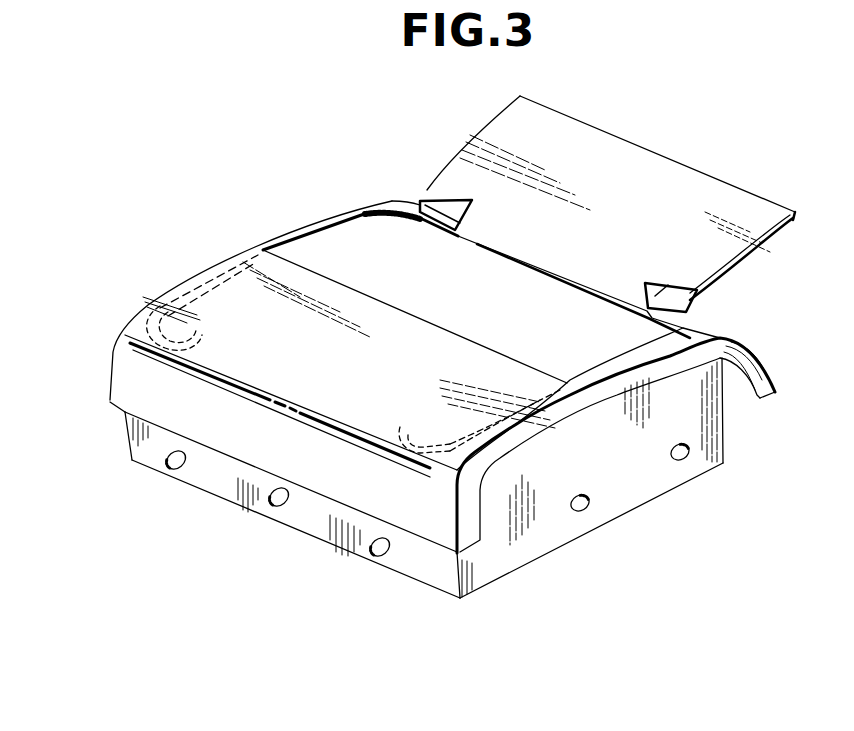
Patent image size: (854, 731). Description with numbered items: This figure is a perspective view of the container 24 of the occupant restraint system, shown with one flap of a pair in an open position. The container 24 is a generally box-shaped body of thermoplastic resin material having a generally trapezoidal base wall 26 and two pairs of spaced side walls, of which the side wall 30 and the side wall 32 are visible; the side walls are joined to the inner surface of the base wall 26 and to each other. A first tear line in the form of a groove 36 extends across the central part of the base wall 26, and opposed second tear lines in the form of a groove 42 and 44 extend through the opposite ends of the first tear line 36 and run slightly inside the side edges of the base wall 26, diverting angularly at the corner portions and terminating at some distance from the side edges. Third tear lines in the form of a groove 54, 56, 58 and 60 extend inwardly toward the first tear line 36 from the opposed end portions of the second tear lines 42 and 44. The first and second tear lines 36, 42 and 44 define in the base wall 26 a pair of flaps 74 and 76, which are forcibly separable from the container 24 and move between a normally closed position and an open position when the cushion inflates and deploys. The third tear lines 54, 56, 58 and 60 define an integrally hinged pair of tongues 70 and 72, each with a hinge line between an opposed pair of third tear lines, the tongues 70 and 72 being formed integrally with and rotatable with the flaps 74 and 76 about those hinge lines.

The container 24 is at (314, 196).
The base wall 26 is at (213, 257).
The side wall 30 is at (633, 483).
The side wall 32 is at (320, 523).
The first tear line in the form of a groove 36 is at (437, 323).
The second tear line in the form of a groove 42 is at (245, 262).
The second tear line in the form of a groove 44 is at (507, 423).
The third tear line in the form of a groove 54 is at (112, 326).
The third tear line in the form of a groove 56 is at (417, 427).
The third tear line in the form of a groove 58 is at (462, 217).
The third tear line in the form of a groove 60 is at (642, 300).
The tongue 70 is at (257, 373).
The tongue 72 is at (560, 247).
The flap 74 is at (243, 302).
The flap 76 is at (660, 217).